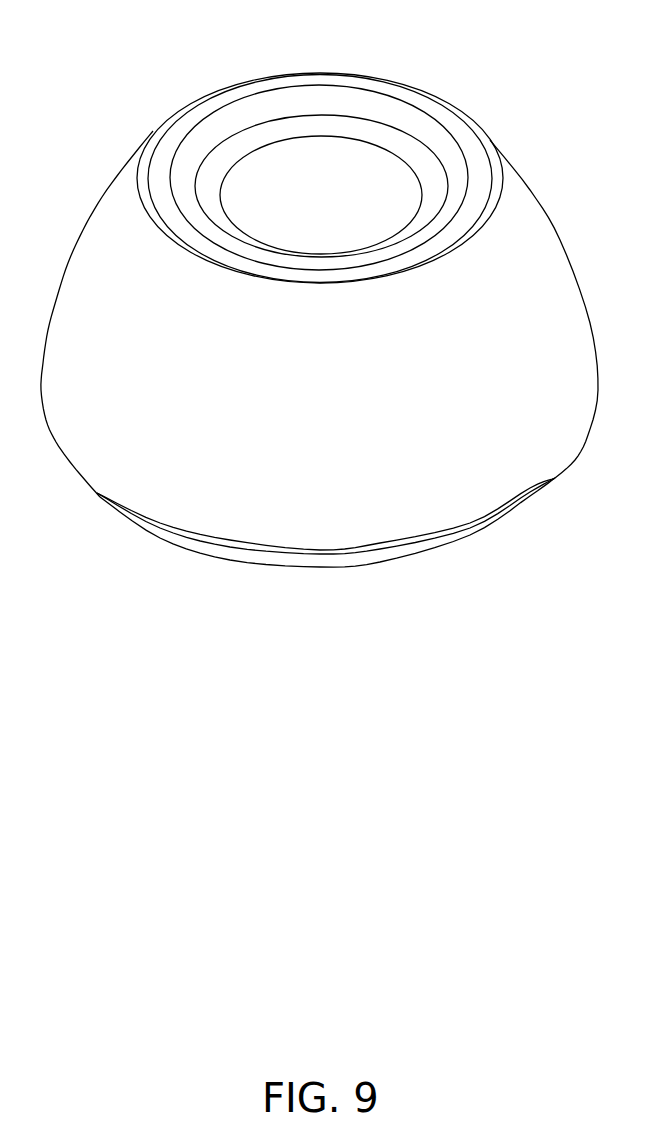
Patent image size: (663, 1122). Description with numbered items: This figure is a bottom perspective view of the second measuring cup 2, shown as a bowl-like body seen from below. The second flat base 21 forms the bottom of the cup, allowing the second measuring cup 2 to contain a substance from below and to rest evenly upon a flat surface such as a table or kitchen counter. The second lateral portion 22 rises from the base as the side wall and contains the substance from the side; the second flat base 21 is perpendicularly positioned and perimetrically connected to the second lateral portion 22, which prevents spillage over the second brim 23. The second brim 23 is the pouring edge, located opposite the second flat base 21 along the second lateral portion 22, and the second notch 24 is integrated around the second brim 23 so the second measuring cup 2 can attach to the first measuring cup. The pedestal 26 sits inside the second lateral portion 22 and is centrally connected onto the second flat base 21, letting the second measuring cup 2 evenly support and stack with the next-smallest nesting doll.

The second measuring cup 2 is at (154, 82).
The second flat base 21 is at (428, 105).
The second lateral portion 22 is at (477, 384).
The second brim 23 is at (249, 546).
The second notch 24 is at (302, 560).
The pedestal 26 is at (333, 204).